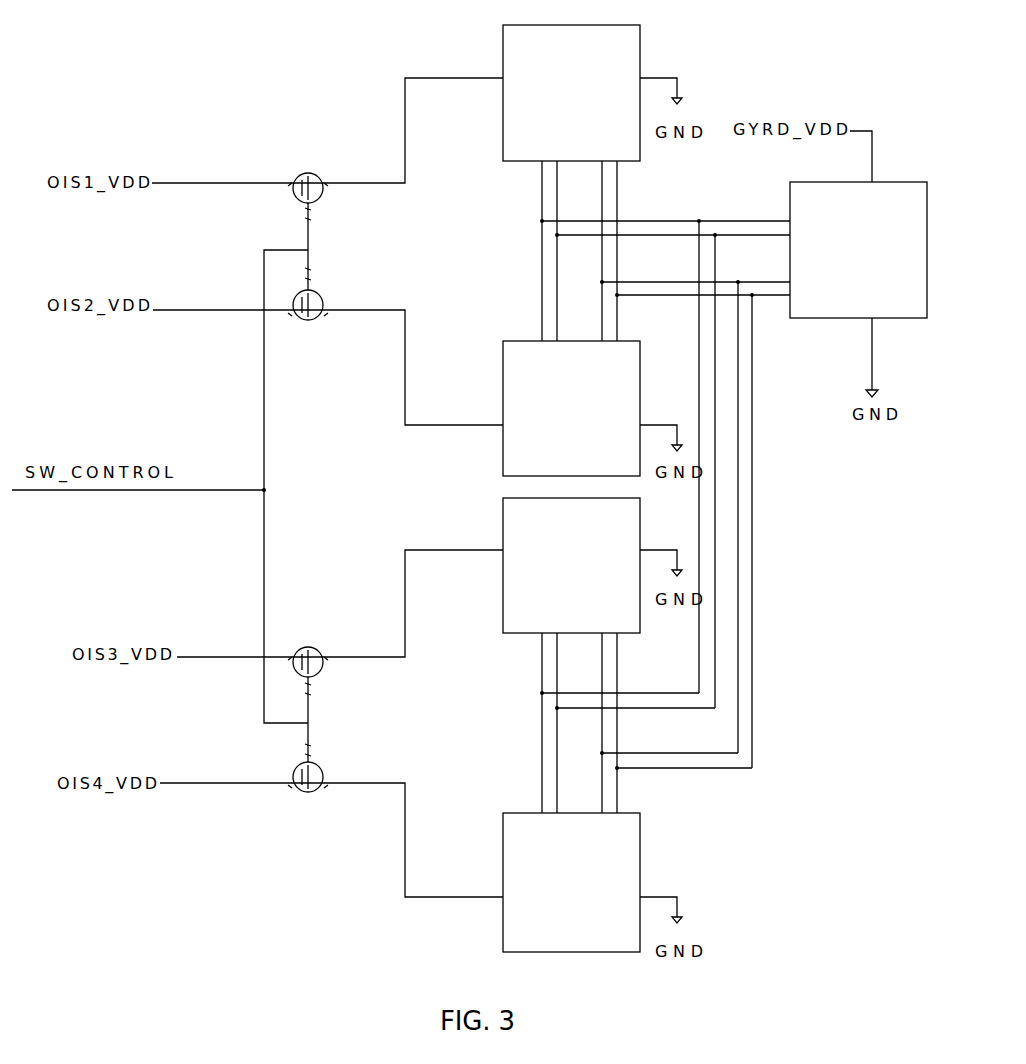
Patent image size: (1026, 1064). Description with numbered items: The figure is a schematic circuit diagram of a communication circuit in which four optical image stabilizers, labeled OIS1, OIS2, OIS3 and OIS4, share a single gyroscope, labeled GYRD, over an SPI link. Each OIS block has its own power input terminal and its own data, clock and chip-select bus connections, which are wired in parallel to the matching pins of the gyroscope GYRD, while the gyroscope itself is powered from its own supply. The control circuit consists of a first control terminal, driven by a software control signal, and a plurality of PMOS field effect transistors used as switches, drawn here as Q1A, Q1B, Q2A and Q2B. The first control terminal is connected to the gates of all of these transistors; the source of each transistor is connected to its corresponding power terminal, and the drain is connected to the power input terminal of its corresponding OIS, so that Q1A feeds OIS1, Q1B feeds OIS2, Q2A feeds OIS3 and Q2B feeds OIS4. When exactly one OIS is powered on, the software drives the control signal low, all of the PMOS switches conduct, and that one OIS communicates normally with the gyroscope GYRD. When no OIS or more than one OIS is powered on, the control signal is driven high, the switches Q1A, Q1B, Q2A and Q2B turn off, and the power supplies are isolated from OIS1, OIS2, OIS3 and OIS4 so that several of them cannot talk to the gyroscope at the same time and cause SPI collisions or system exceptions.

The first optical image stabilization driver OIS1 is at (571, 93).
The second optical image stabilization driver OIS2 is at (571, 408).
The third optical image stabilization driver OIS3 is at (571, 566).
The fourth optical image stabilization driver OIS4 is at (571, 882).
The gyro sensor GYRD is at (858, 250).
The PMOS switch transistor Q1A is at (321, 181).
The PMOS switch transistor Q1B is at (331, 316).
The PMOS switch transistor Q2A is at (334, 656).
The PMOS switch transistor Q2B is at (320, 788).